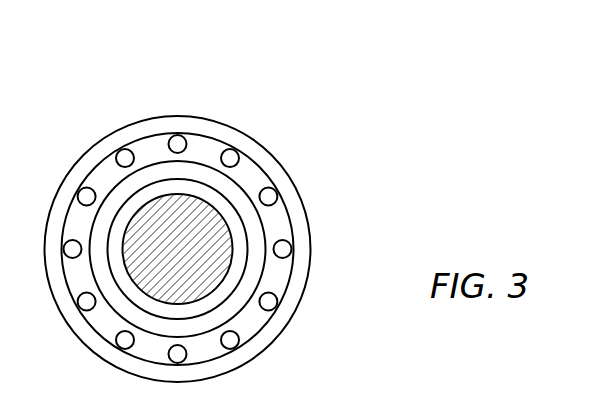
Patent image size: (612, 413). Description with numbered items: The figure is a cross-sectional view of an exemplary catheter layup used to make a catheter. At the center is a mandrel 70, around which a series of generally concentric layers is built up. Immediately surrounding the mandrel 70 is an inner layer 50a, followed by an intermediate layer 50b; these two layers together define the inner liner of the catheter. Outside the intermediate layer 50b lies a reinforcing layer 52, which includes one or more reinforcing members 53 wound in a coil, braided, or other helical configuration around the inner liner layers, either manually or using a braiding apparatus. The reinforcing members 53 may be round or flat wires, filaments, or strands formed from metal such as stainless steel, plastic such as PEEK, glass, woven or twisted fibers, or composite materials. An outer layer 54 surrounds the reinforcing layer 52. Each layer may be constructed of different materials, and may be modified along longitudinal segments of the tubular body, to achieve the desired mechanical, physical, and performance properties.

The inner layer 50a is at (160, 187).
The intermediate layer 50b is at (202, 170).
The reinforcing layer 52 is at (277, 200).
The reinforcing member 53 is at (232, 338).
The outer layer 54 is at (273, 168).
The mandrel 70 is at (227, 260).